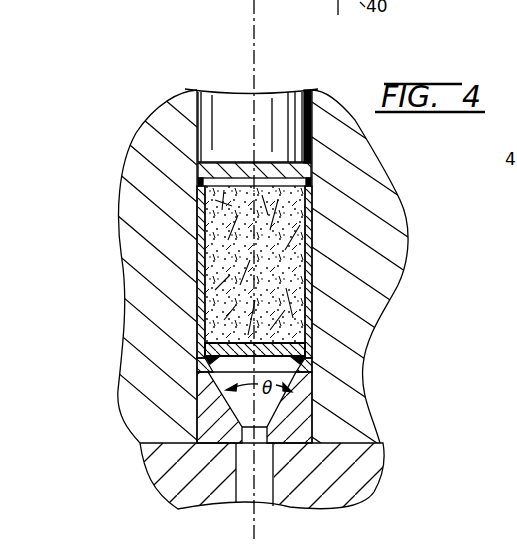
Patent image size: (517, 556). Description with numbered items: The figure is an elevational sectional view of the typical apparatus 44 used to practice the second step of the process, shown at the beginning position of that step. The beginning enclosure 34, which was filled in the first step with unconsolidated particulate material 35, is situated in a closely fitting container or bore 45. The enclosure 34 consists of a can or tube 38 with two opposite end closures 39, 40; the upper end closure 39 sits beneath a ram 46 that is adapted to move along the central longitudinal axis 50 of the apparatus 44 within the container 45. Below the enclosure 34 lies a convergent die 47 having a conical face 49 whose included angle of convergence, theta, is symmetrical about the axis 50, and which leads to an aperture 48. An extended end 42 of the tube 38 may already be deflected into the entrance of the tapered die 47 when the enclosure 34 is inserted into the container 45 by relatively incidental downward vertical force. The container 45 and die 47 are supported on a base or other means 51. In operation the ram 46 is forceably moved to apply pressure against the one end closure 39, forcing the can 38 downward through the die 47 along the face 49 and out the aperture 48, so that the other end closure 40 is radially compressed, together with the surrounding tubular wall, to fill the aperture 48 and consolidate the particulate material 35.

The enclosure 34 is at (246, 270).
The unconsolidated particulate material 35 is at (300, 297).
The can or tube 38 is at (193, 195).
The end closure 39 is at (212, 157).
The end closure 40 is at (298, 360).
The extended end 42 is at (200, 371).
The apparatus 44 is at (153, 221).
The container or bore 45 is at (315, 142).
The ram 46 is at (235, 117).
The convergent die 47 is at (207, 424).
The aperture 48 is at (265, 445).
The conical face 49 is at (312, 403).
The central longitudinal axis 50 is at (252, 516).
The base 51 is at (362, 458).